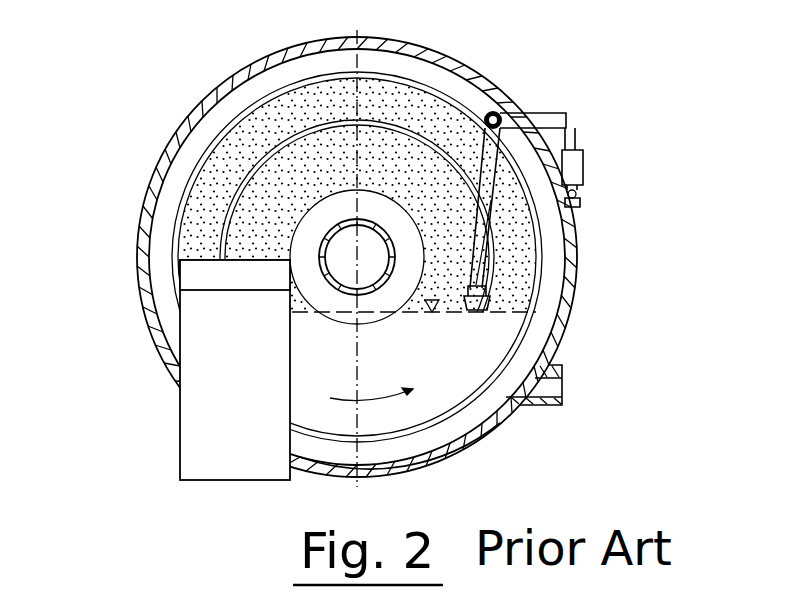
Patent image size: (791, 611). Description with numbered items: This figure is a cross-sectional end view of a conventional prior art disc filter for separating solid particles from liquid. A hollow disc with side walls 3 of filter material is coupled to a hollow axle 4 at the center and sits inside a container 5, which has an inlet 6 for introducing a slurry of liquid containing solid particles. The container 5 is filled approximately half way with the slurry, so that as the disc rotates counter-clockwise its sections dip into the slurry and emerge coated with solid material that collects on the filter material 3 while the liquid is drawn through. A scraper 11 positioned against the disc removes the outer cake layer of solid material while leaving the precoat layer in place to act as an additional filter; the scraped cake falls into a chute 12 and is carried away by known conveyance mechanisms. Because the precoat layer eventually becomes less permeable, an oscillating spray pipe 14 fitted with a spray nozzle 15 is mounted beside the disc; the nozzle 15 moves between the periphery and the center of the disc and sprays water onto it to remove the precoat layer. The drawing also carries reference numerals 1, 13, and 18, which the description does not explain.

The outer shell of rotary drum 1 is at (238, 68).
The side walls of filter material 3 is at (400, 100).
The hollow axle 4 is at (330, 230).
The container 5 is at (457, 447).
The inlet 6 is at (547, 383).
The scraper 11 is at (195, 277).
The chute 12 is at (207, 398).
The pivot support 13 is at (481, 87).
The oscillating spray pipe 14 is at (483, 228).
The spray nozzle 15 is at (487, 283).
The level sensor 18 is at (467, 310).